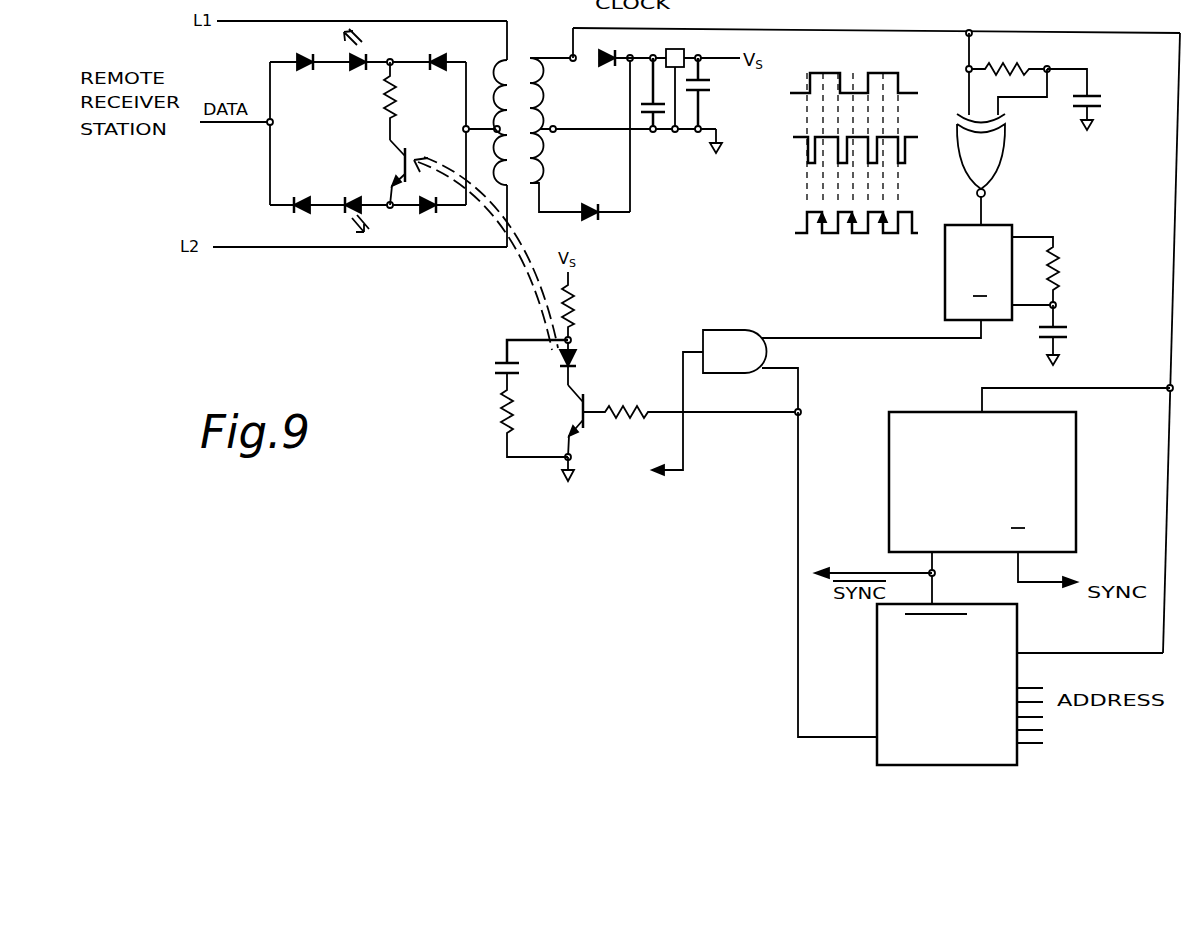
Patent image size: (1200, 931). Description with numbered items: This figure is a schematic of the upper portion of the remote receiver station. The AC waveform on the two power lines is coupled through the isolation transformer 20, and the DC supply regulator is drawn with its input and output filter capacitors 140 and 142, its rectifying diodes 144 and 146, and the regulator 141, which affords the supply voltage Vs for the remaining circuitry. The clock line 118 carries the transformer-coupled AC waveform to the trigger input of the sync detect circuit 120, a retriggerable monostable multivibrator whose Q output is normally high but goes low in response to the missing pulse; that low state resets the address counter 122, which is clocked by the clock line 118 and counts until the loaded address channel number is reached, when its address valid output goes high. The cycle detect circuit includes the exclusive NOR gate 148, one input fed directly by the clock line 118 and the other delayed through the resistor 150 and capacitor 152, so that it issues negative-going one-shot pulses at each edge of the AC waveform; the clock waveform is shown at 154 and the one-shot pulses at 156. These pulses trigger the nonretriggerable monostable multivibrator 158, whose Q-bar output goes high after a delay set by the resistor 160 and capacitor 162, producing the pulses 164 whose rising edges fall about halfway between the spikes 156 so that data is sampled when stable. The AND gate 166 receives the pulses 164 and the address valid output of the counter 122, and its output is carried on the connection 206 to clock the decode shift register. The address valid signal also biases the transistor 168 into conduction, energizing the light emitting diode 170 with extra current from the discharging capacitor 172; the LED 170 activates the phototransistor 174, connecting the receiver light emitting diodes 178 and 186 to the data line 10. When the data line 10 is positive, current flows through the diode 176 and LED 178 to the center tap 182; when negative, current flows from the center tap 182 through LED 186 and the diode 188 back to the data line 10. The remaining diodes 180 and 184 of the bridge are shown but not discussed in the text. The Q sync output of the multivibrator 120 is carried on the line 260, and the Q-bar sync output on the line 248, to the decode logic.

The data line 10 is at (247, 127).
The isolation transformer 20 is at (528, 45).
The clock line 118 is at (771, 29).
The sync detect circuit 120 is at (1076, 485).
The address counter 122 is at (1017, 634).
The input filter capacitor 140 is at (649, 136).
The regulator 141 is at (676, 47).
The output filter capacitor 142 is at (716, 83).
The rectifying diode 144 is at (604, 71).
The rectifying diode 146 is at (588, 203).
The exclusive NOR gate 148 is at (998, 158).
The resistor 150 is at (1021, 60).
The capacitor 152 is at (1103, 101).
The AC waveform 154 is at (804, 97).
The one-shot pulses 156 is at (804, 143).
The monostable multivibrator 158 is at (1003, 222).
The resistor 160 is at (1066, 267).
The capacitor 162 is at (1070, 335).
The Q-bar pulses 164 is at (801, 221).
The AND gate 166 is at (741, 323).
The transistor 168 is at (576, 410).
The light emitting diode 170 is at (578, 361).
The capacitor 172 is at (491, 378).
The phototransistor 174 is at (393, 163).
The diode 176 is at (299, 51).
The light emitting diode 178 is at (353, 57).
The diode 180 is at (437, 215).
The center tap 182 is at (466, 126).
The diode 184 is at (449, 54).
The light emitting diode 186 is at (347, 216).
The diode 188 is at (297, 213).
The connection 206 is at (678, 474).
The sync pulse line 248 is at (1055, 581).
The sync line 260 is at (866, 571).